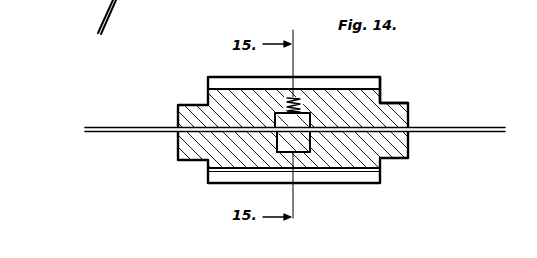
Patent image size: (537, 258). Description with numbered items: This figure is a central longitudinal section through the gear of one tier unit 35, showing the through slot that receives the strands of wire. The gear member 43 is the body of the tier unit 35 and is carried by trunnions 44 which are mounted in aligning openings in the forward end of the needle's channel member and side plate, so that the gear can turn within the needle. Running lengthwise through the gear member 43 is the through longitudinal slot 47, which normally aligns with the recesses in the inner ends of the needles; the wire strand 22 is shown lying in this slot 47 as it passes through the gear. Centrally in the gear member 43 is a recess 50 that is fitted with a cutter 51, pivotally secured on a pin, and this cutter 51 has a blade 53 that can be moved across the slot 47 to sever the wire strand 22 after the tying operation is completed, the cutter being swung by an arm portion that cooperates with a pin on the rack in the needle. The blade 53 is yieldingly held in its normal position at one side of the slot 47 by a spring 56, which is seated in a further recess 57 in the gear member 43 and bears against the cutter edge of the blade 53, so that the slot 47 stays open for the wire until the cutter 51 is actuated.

The wire strand 22 is at (440, 127).
The tier unit 35 is at (203, 85).
The gear member 43 is at (368, 176).
The trunnions 44 is at (195, 161).
The through longitudinal slot 47 is at (178, 132).
The recess 50 is at (306, 113).
The cutter 51 is at (311, 154).
The blade 53 is at (381, 88).
The spring 56 is at (301, 110).
The recess 57 is at (285, 99).